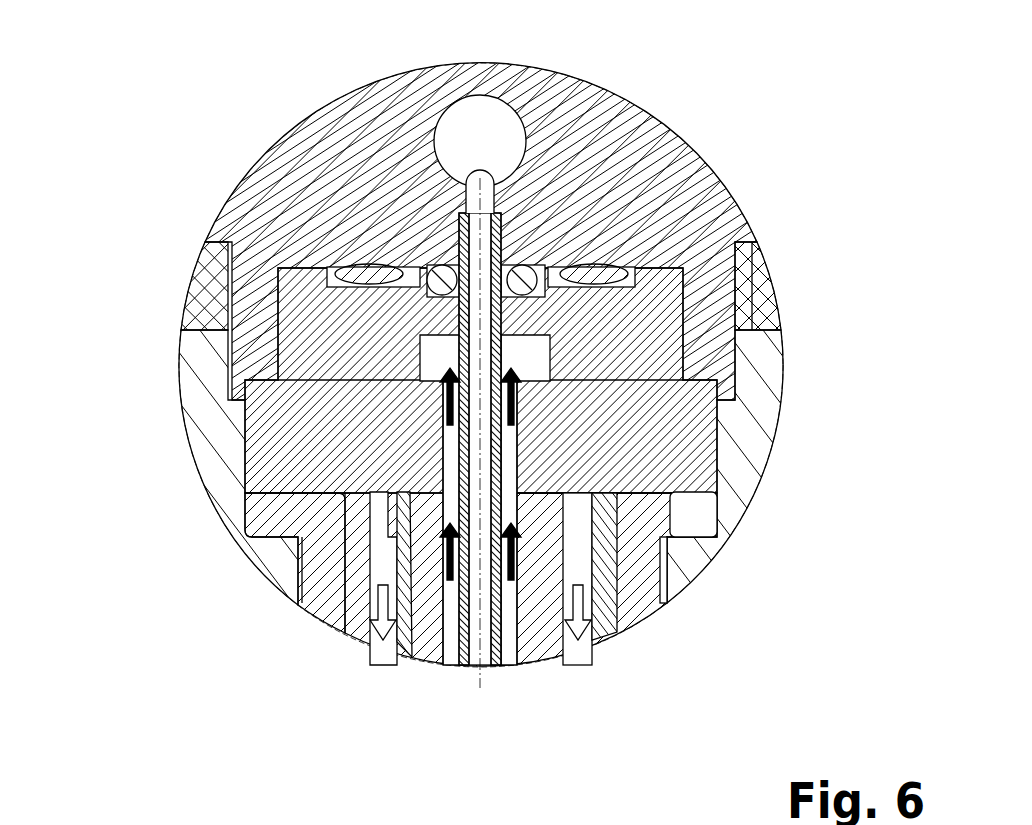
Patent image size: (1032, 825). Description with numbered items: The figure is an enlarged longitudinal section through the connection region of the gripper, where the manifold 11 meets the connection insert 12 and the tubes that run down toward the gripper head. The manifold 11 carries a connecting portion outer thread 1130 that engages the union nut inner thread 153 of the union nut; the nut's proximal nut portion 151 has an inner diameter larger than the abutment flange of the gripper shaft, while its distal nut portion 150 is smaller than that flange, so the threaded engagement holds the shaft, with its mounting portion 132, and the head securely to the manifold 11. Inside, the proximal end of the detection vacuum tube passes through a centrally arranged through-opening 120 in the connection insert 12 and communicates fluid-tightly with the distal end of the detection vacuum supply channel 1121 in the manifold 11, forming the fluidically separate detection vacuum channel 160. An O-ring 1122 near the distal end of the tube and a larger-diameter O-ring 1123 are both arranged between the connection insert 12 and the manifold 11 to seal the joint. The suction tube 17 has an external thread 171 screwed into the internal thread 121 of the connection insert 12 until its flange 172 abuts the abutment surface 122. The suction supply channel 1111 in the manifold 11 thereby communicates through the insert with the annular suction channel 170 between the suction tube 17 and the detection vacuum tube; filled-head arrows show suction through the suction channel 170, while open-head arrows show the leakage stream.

The manifold 11 is at (317, 198).
The connection insert 12 is at (663, 302).
The suction tube 17 is at (543, 630).
The through-opening 120 is at (507, 315).
The internal thread 121 is at (547, 437).
The abutment surface 122 is at (563, 500).
The mounting portion 132 is at (295, 659).
The distal nut portion 150 is at (683, 577).
The proximal nut portion 151 is at (767, 315).
The union nut inner thread 153 is at (228, 347).
The detection vacuum channel 160 is at (487, 655).
The suction channel 170 is at (449, 645).
The external thread 171 is at (667, 540).
The flange 172 is at (407, 495).
The suction supply channel 1111 is at (437, 362).
The detection vacuum supply channel 1121 is at (478, 172).
The O-ring 1122 is at (527, 275).
The O-ring 1123 is at (608, 272).
The connecting portion outer thread 1130 is at (205, 328).